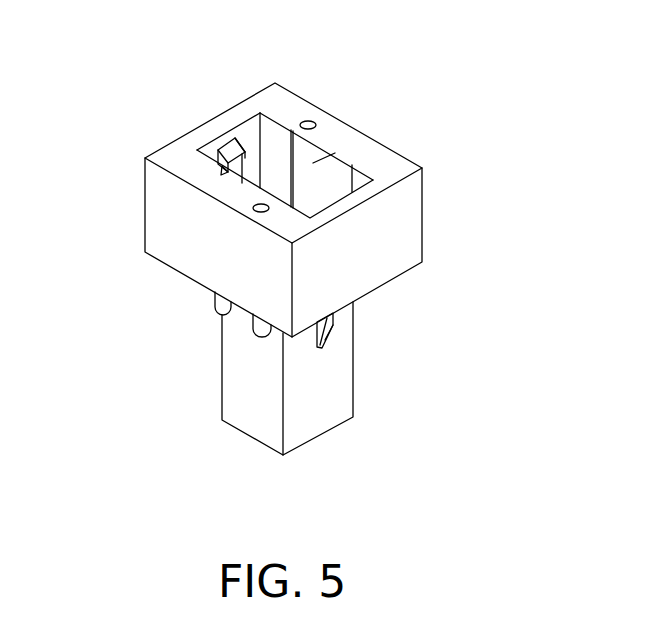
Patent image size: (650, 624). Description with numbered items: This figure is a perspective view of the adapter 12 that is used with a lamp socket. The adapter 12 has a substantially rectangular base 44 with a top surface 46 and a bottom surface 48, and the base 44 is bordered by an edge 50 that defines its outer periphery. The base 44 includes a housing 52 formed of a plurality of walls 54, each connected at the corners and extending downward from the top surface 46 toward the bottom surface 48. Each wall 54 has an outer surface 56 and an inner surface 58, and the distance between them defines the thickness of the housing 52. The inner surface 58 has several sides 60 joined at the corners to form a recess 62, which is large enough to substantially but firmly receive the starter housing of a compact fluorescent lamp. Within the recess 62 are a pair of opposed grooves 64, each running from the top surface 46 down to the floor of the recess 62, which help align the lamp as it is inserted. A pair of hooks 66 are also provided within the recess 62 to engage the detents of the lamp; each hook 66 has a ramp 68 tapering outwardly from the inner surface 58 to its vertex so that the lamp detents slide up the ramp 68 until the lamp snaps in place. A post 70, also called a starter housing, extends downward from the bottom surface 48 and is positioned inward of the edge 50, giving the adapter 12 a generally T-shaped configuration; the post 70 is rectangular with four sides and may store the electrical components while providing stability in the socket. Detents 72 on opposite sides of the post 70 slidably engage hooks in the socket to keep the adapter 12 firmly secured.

The adapter 12 is at (460, 182).
The base 44 is at (378, 140).
The top surface 46 is at (225, 130).
The bottom surface 48 is at (180, 273).
The edge 50 is at (370, 192).
The housing 52 is at (190, 181).
The walls 54 is at (202, 132).
The outer surface 56 is at (165, 238).
The inner surface 58 is at (247, 135).
The sides 60 is at (205, 146).
The recess 62 is at (263, 165).
The grooves 64 is at (226, 198).
The hooks 66 is at (232, 137).
The ramp 68 is at (212, 125).
The post 70 is at (248, 413).
The detents 72 is at (333, 330).